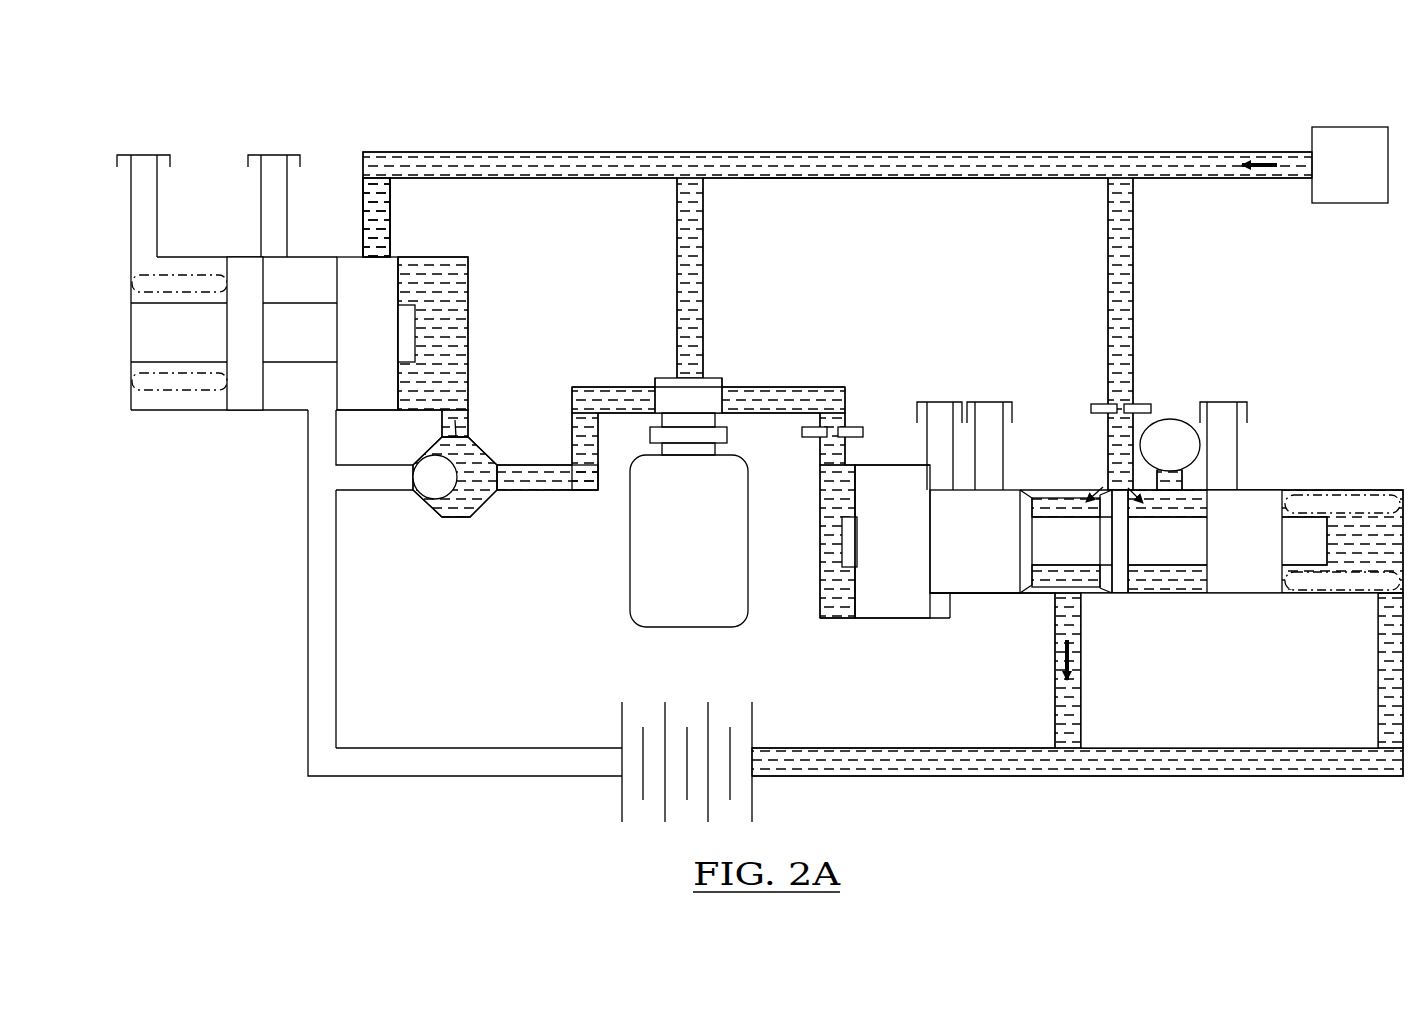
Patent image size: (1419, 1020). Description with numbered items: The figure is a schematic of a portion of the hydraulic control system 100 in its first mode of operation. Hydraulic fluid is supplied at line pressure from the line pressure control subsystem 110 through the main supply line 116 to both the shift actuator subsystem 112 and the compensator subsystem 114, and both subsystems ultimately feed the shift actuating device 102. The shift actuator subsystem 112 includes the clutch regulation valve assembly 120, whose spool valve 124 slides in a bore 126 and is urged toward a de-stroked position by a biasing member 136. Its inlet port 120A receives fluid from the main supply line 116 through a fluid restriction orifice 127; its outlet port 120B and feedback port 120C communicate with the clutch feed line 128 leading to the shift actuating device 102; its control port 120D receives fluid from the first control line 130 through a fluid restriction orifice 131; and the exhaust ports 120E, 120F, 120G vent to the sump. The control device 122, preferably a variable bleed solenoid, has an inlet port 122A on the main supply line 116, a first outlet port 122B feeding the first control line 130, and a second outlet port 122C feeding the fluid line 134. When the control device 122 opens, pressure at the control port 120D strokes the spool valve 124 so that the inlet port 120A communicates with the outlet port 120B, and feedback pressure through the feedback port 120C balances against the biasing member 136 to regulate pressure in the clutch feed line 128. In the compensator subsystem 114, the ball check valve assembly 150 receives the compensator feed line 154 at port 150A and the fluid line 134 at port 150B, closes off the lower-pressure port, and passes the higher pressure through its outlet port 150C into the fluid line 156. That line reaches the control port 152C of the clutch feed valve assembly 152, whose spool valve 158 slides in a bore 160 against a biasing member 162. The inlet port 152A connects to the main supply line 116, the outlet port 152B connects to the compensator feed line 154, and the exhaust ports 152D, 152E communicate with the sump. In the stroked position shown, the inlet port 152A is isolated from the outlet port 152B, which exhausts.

The hydraulic control system 100 is at (1054, 125).
The shift actuating device 102 is at (773, 720).
The line pressure control subsystem 110 is at (1370, 178).
The shift actuator subsystem 112 is at (1282, 393).
The compensator subsystem 114 is at (568, 125).
The main supply line 116 is at (875, 180).
The clutch regulation valve assembly 120 is at (1332, 480).
The inlet port 120A is at (1126, 487).
The outlet port 120B is at (1067, 596).
The feedback port 120C is at (1393, 598).
The control port 120D is at (832, 465).
The exhaust port 120E is at (947, 490).
The exhaust port 120F is at (990, 484).
The exhaust port 120G is at (1224, 486).
The control device 122 is at (630, 592).
The inlet port 122A is at (690, 377).
The first outlet port 122B is at (727, 395).
The second outlet port 122C is at (653, 395).
The spool valve 124 is at (973, 575).
The bore 126 is at (826, 612).
The fluid restriction orifice 127 is at (1102, 404).
The clutch feed line 128 is at (1070, 692).
The first control line 130 is at (828, 386).
The fluid restriction orifice 131 is at (807, 438).
The fluid line 134 is at (582, 482).
The biasing member 136 is at (1293, 593).
The ball check valve assembly 150 is at (461, 548).
The port 150A is at (413, 477).
The port 150B is at (500, 478).
The outlet port 150C is at (462, 420).
The clutch feed valve assembly 152 is at (492, 309).
The inlet port 152A is at (377, 252).
The outlet port 152B is at (323, 410).
The control port 152C is at (455, 408).
The exhaust port 152D is at (145, 252).
The exhaust port 152E is at (275, 256).
The compensator feed line 154 is at (337, 665).
The fluid line 156 is at (440, 427).
The spool valve 158 is at (383, 278).
The bore 160 is at (193, 402).
The biasing member 162 is at (165, 393).